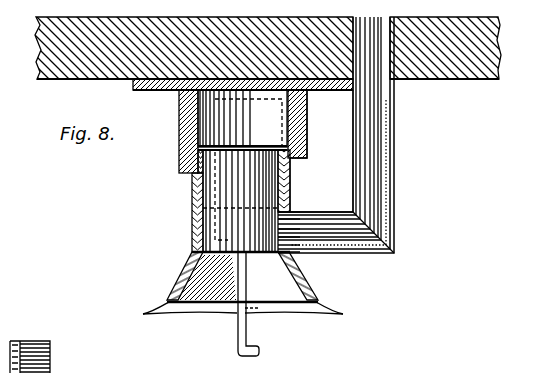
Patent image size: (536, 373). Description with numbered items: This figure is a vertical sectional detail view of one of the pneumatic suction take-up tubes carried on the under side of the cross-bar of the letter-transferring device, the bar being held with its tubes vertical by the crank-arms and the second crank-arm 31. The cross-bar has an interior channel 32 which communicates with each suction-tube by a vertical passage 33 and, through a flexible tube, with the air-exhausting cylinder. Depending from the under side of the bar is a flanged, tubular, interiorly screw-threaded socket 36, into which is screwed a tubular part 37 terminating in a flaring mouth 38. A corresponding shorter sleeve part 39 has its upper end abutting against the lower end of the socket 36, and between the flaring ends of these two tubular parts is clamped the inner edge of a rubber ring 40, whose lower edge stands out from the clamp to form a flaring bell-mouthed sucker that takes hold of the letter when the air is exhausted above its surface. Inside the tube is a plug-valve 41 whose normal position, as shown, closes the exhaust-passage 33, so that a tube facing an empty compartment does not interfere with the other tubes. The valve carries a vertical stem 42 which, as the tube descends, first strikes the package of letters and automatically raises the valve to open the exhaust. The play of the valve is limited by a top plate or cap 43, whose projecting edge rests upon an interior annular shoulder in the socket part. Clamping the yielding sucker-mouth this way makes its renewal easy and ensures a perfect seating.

The second crank-arm 31 is at (289, 232).
The interior channel 32 is at (268, 46).
The vertical passage 33 is at (336, 135).
The socket 36 is at (321, 151).
The tubular part 37 is at (294, 169).
The flaring mouth 38 is at (189, 305).
The sleeve part 39 is at (193, 206).
The rubber ring 40 is at (245, 306).
The plug-valve 41 is at (241, 201).
The vertical stem 42 is at (252, 304).
The top plate or cap 43 is at (242, 120).